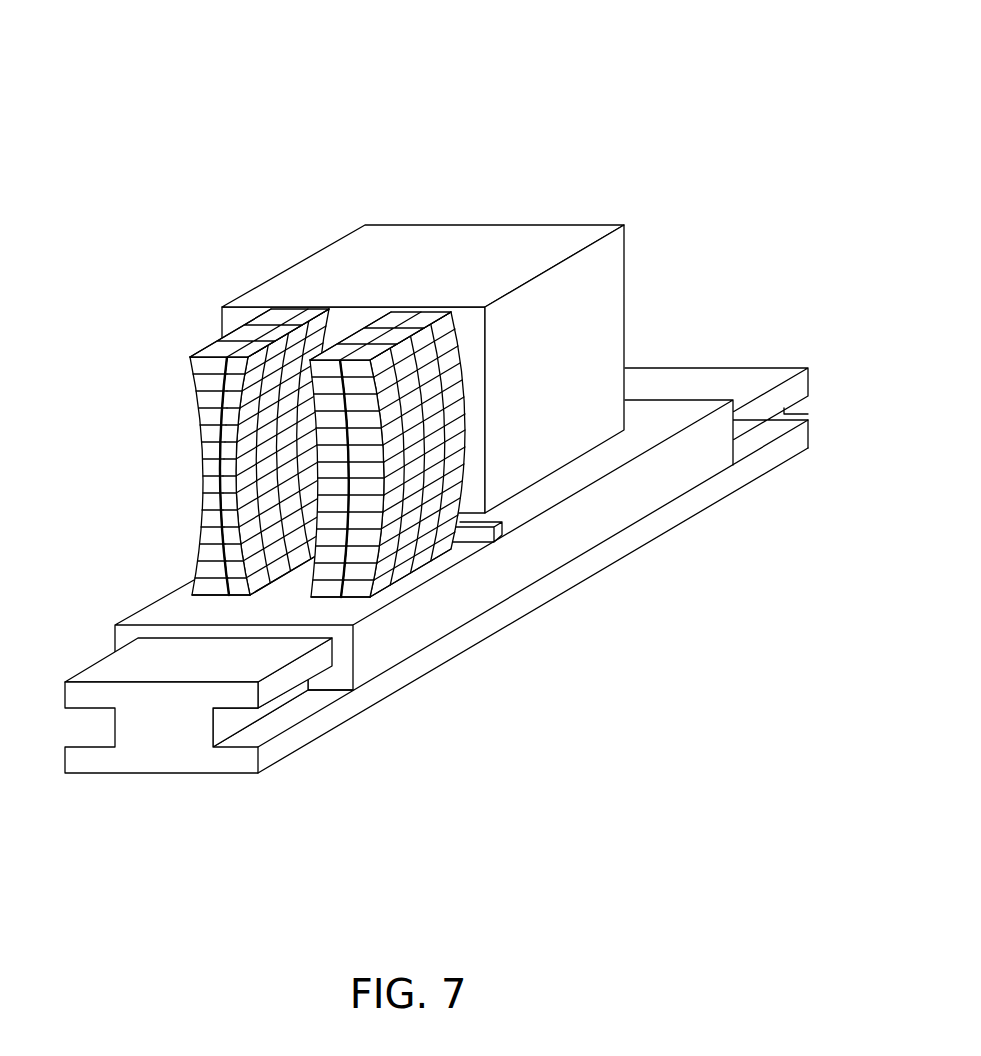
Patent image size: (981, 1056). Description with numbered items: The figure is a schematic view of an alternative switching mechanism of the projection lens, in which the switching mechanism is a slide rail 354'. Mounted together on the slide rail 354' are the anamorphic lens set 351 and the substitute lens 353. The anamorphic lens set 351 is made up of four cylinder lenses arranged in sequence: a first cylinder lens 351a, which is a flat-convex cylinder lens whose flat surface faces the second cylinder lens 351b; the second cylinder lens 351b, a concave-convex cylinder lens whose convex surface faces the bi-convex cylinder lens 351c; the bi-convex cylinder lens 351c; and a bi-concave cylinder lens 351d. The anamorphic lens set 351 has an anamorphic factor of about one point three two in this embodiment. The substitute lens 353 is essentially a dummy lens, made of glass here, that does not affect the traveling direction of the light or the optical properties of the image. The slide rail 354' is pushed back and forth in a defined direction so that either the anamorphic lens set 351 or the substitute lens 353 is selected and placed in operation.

The anamorphic lens set 351 is at (323, 313).
The first cylinder lens 351a is at (422, 322).
The second cylinder lens 351b is at (380, 369).
The bi-convex cylinder lens 351c is at (282, 350).
The bi-concave cylinder lens 351d is at (216, 356).
The substitute lens 353 is at (598, 284).
The slide rail 354' is at (436, 639).